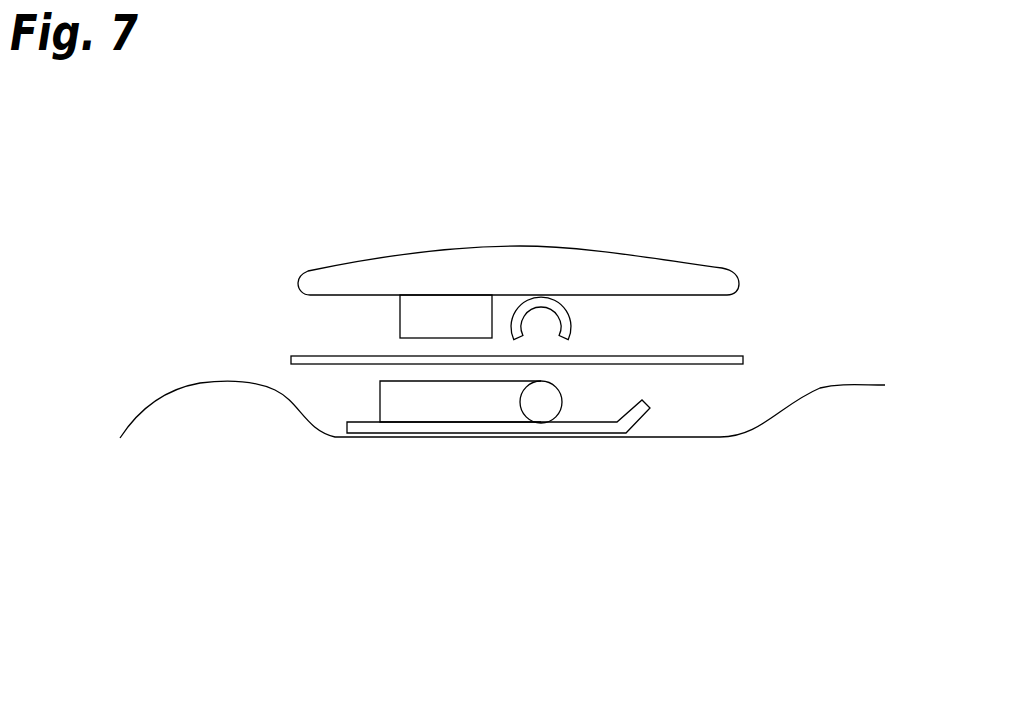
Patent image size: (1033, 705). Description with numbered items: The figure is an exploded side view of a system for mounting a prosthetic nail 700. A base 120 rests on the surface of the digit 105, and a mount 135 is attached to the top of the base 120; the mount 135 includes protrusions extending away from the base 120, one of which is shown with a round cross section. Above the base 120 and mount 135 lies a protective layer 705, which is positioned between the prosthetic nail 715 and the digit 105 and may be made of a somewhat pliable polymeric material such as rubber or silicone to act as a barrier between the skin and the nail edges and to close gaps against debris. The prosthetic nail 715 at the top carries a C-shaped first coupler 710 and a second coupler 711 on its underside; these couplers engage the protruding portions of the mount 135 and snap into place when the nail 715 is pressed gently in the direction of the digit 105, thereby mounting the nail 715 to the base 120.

The system for mounting a prosthetic nail 700 is at (783, 137).
The prosthetic nail 715 is at (622, 265).
The second coupler 711 is at (410, 316).
The first coupler 710 is at (560, 318).
The protective layer 705 is at (745, 360).
The mount 135 is at (408, 402).
The base 120 is at (648, 414).
The digit 105 is at (157, 425).